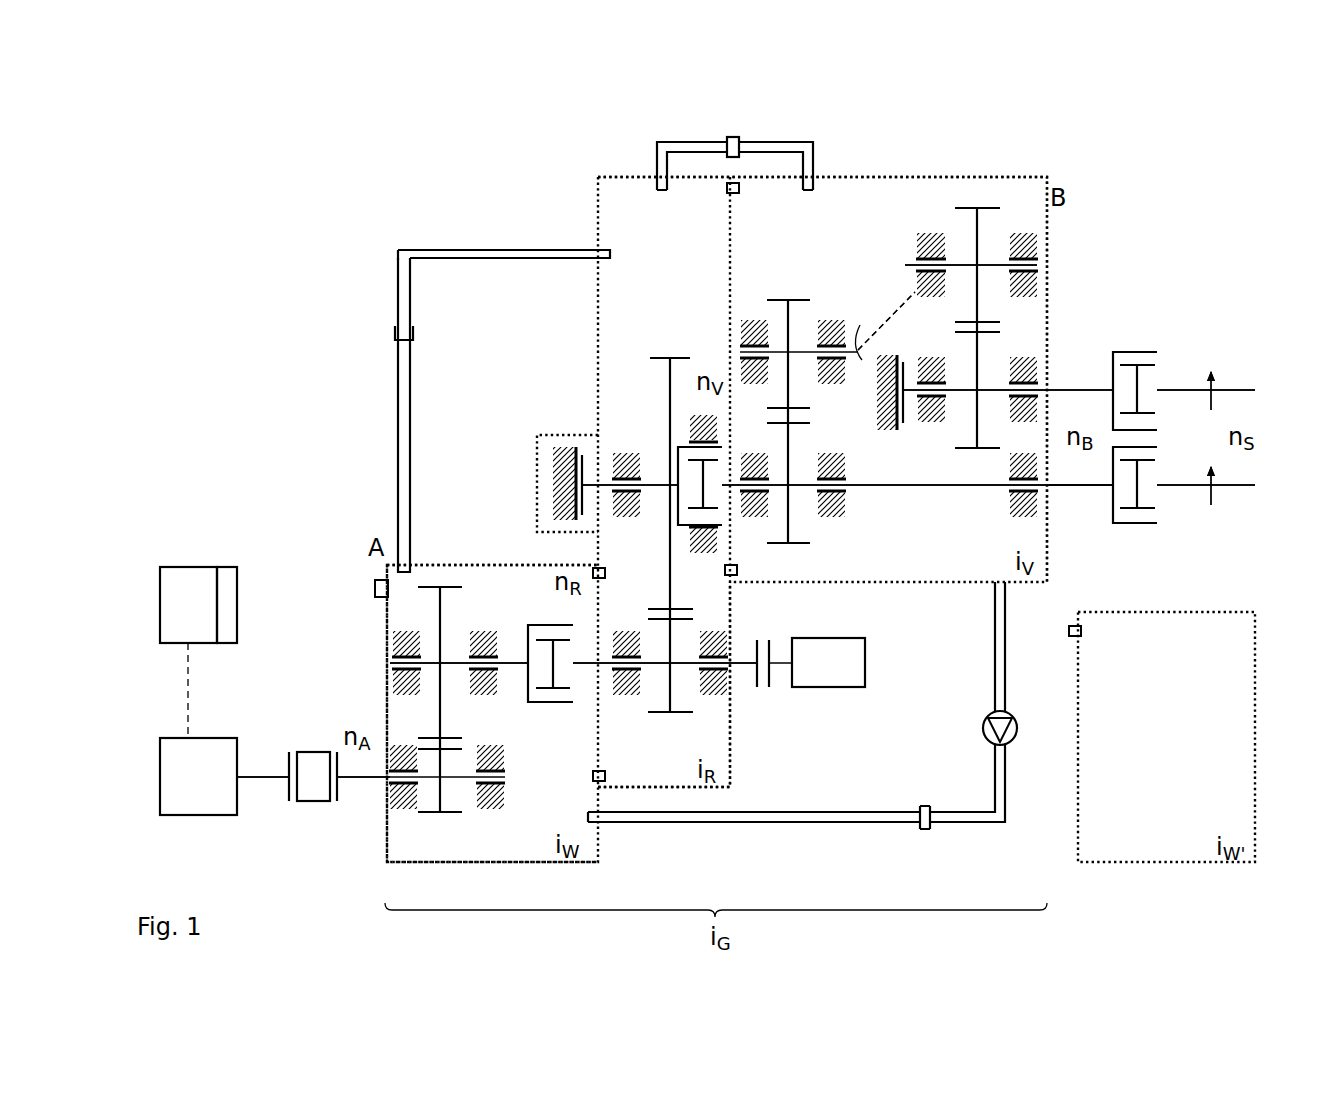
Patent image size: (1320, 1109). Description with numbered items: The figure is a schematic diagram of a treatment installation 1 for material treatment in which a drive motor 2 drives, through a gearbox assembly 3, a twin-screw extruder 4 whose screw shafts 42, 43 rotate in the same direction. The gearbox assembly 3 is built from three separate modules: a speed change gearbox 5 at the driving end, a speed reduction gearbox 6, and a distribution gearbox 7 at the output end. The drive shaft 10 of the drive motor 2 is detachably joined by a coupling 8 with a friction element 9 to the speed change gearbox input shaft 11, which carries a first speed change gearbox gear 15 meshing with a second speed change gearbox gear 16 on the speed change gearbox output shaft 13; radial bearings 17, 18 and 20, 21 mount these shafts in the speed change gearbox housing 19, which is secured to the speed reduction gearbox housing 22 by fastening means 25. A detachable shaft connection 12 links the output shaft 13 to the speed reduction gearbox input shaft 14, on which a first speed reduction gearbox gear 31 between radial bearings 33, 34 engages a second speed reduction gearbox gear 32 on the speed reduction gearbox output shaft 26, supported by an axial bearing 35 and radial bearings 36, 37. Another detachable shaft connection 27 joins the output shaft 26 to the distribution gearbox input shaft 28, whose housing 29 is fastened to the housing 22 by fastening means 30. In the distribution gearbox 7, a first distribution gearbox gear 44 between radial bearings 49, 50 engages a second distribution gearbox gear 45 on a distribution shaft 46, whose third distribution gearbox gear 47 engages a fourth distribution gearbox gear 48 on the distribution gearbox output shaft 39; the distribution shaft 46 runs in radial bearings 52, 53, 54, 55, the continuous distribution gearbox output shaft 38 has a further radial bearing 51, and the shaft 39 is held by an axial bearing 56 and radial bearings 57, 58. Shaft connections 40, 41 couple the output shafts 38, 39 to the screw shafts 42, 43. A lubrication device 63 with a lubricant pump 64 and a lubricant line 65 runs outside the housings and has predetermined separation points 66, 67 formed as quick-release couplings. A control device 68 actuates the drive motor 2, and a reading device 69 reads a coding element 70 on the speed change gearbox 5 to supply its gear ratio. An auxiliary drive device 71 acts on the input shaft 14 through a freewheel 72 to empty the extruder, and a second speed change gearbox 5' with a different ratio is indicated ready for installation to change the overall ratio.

The treatment installation 1 is at (425, 193).
The drive motor 2 is at (197, 815).
The gearbox assembly 3 is at (533, 451).
The twin-screw extruder 4 is at (1223, 364).
The speed change gearbox 5 is at (440, 551).
The second speed change gearbox 5' is at (1166, 705).
The speed reduction gearbox 6 is at (723, 792).
The distribution gearbox 7 is at (1051, 178).
The coupling 8 is at (310, 804).
The friction element 9 is at (320, 797).
The drive shaft 10 is at (262, 786).
The speed change gearbox input shaft 11 is at (360, 786).
The detachable shaft connection 12 is at (529, 620).
The speed change gearbox output shaft 13 is at (512, 655).
The speed reduction gearbox input shaft 14 is at (582, 670).
The first speed change gearbox gear 15 is at (440, 812).
The second speed change gearbox gear 16 is at (437, 617).
The radial bearing 17 is at (398, 808).
The radial bearing 18 is at (487, 808).
The speed change gearbox housing 19 is at (385, 708).
The radial bearing 20 is at (397, 683).
The radial bearing 21 is at (473, 637).
The speed reduction gearbox housing 22 is at (598, 246).
The fastening means 25 is at (593, 572).
The speed reduction gearbox output shaft 26 is at (598, 476).
The detachable shaft connection 27 is at (724, 532).
The distribution gearbox input shaft 28 is at (804, 494).
The distribution gearbox housing 29 is at (912, 285).
The fastening means 30 is at (727, 189).
The first speed reduction gearbox gear 31 is at (665, 697).
The second speed reduction gearbox gear 32 is at (668, 377).
The radial bearing 33 is at (623, 693).
The radial bearing 34 is at (723, 693).
The axial bearing 35 is at (562, 478).
The radial bearing 36 is at (625, 452).
The radial bearing 37 is at (690, 422).
The distribution gearbox output shaft 38 is at (1079, 491).
The distribution gearbox output shaft 39 is at (1115, 352).
The shaft connection 40 is at (1147, 525).
The shaft connection 41 is at (1157, 352).
The screw shaft 42 is at (1222, 492).
The screw shaft 43 is at (1248, 386).
The first distribution gearbox gear 44 is at (797, 530).
The second distribution gearbox gear 45 is at (800, 297).
The distribution shaft 46 is at (1005, 268).
The third distribution gearbox gear 47 is at (979, 235).
The fourth distribution gearbox gear 48 is at (980, 340).
The radial bearing 49 is at (755, 517).
The radial bearing 50 is at (842, 512).
The radial bearing 51 is at (1035, 513).
The radial bearing 52 is at (753, 322).
The radial bearing 53 is at (830, 320).
The radial bearing 54 is at (937, 240).
The radial bearing 55 is at (862, 350).
The axial bearing 56 is at (892, 428).
The radial bearing 57 is at (937, 420).
The radial bearing 58 is at (1089, 385).
The lubrication device 63 is at (396, 385).
The lubricant pump 64 is at (984, 728).
The lubricant line 65 is at (814, 167).
The predetermined separation point 66 is at (396, 332).
The predetermined separation point 67 is at (727, 142).
The control device 68 is at (178, 567).
The reading device 69 is at (228, 567).
The coding element 70 is at (375, 588).
The auxiliary drive device 71 is at (840, 682).
The freewheel 72 is at (762, 680).